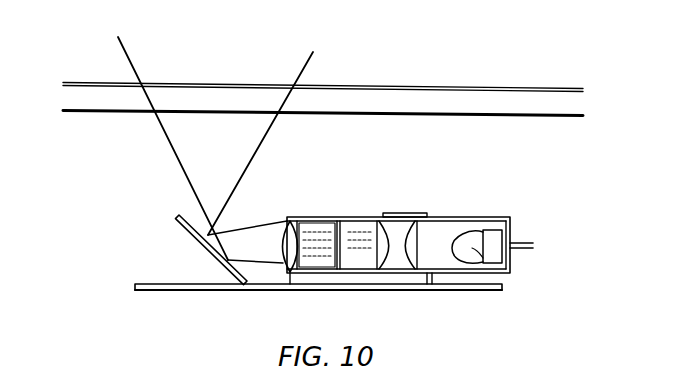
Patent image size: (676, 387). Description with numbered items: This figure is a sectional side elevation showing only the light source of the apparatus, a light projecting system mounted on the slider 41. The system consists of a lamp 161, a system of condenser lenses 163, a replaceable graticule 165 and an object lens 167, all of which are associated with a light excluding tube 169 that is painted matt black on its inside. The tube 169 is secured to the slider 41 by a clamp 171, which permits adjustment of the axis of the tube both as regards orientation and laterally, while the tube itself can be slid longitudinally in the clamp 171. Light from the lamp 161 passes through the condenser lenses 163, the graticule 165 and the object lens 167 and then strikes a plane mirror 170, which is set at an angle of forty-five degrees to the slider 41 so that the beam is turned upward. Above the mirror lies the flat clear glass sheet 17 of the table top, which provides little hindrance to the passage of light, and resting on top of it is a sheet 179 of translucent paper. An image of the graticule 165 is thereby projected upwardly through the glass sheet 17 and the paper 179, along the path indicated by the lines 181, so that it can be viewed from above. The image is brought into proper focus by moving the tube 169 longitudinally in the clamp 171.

The clear glass sheet 17 is at (402, 97).
The sheet of translucent paper 179 is at (463, 84).
The lines 181 is at (258, 143).
The plane mirror 170 is at (192, 206).
The light excluding tube 169 is at (302, 218).
The clamp 171 is at (411, 207).
The object lens 167 is at (287, 275).
The replaceable graticule 165 is at (337, 276).
The system of condenser lenses 163 is at (404, 276).
The lamp 161 is at (476, 262).
The slider 41 is at (138, 289).